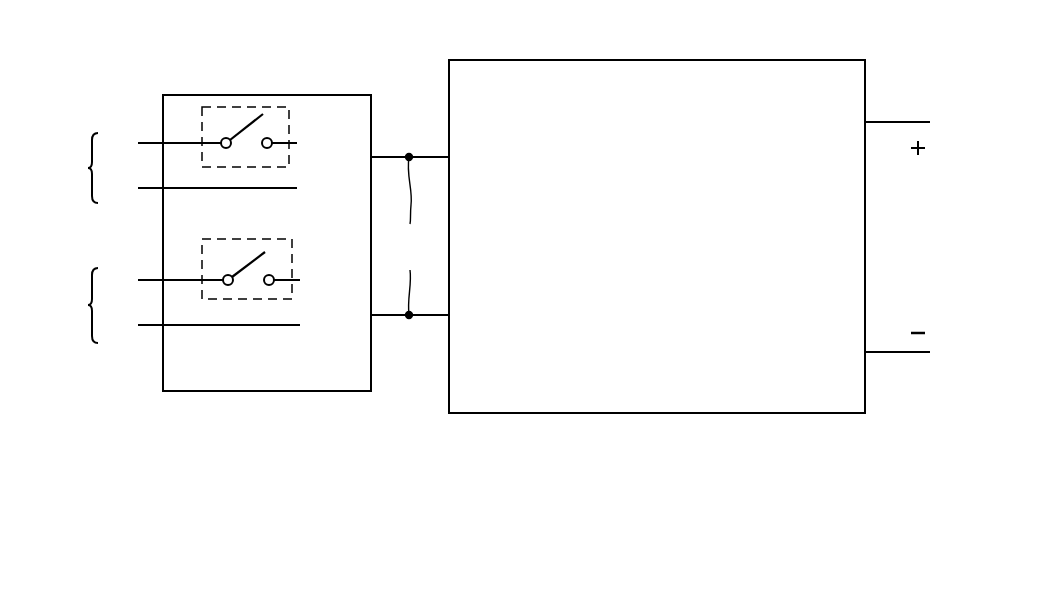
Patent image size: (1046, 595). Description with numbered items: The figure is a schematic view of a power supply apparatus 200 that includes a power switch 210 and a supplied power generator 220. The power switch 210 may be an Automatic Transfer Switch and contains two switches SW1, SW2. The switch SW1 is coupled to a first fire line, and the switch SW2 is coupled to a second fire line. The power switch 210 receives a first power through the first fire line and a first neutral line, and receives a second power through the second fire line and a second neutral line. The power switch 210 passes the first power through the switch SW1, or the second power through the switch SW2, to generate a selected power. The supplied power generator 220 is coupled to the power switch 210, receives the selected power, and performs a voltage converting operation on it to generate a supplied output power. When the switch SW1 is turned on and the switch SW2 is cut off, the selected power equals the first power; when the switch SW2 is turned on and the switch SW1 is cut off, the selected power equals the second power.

The power supply apparatus 200 is at (872, 496).
The power switch 210 is at (242, 95).
The supplied power generator 220 is at (643, 60).
The switch SW1 is at (289, 110).
The switch SW2 is at (269, 236).